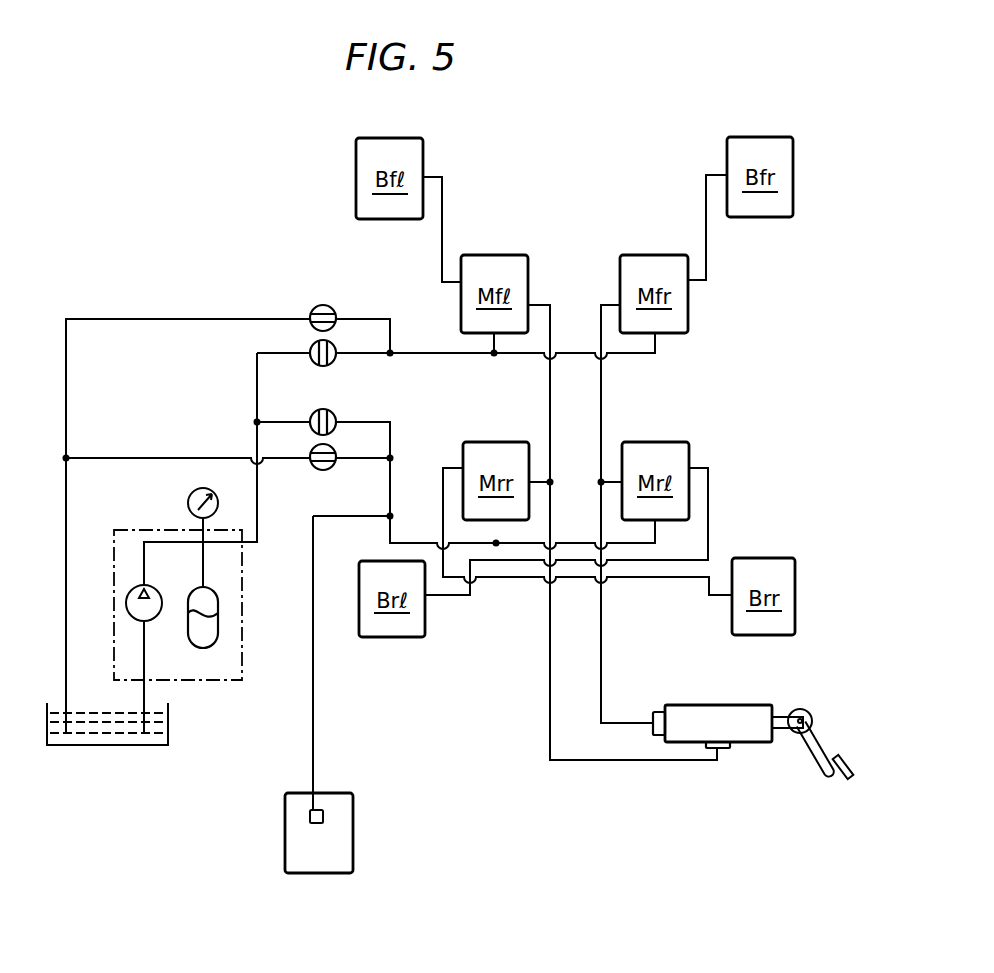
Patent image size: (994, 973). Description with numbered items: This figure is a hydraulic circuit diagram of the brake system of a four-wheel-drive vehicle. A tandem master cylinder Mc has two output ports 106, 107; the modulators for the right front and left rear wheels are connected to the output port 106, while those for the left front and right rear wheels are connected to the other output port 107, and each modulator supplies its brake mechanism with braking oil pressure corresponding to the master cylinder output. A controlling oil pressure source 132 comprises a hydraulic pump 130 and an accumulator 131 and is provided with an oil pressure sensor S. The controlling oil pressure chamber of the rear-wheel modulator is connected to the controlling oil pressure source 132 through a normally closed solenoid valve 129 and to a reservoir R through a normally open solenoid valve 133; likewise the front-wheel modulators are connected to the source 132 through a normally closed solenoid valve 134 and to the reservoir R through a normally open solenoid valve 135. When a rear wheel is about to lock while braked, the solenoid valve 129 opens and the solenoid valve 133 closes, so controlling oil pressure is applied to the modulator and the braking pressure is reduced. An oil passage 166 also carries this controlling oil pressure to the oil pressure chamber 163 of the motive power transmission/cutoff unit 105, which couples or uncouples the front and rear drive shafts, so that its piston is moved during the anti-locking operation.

The normally open solenoid valve 135 is at (323, 305).
The normally closed solenoid valve 134 is at (310, 347).
The normally closed solenoid valve 129 is at (312, 412).
The normally open solenoid valve 133 is at (323, 470).
The hydraulic pump 130 is at (159, 589).
The accumulator 131 is at (218, 612).
The controlling oil pressure source 132 is at (243, 672).
The oil passage 166 is at (313, 681).
The motive power transmission/cutoff unit 105 is at (334, 793).
The oil pressure chamber 163 is at (323, 816).
The output port 106 is at (653, 718).
The output port 107 is at (727, 750).
The oil pressure sensor S is at (188, 504).
The reservoir R is at (168, 723).
The tandem master cylinder Mc is at (725, 710).